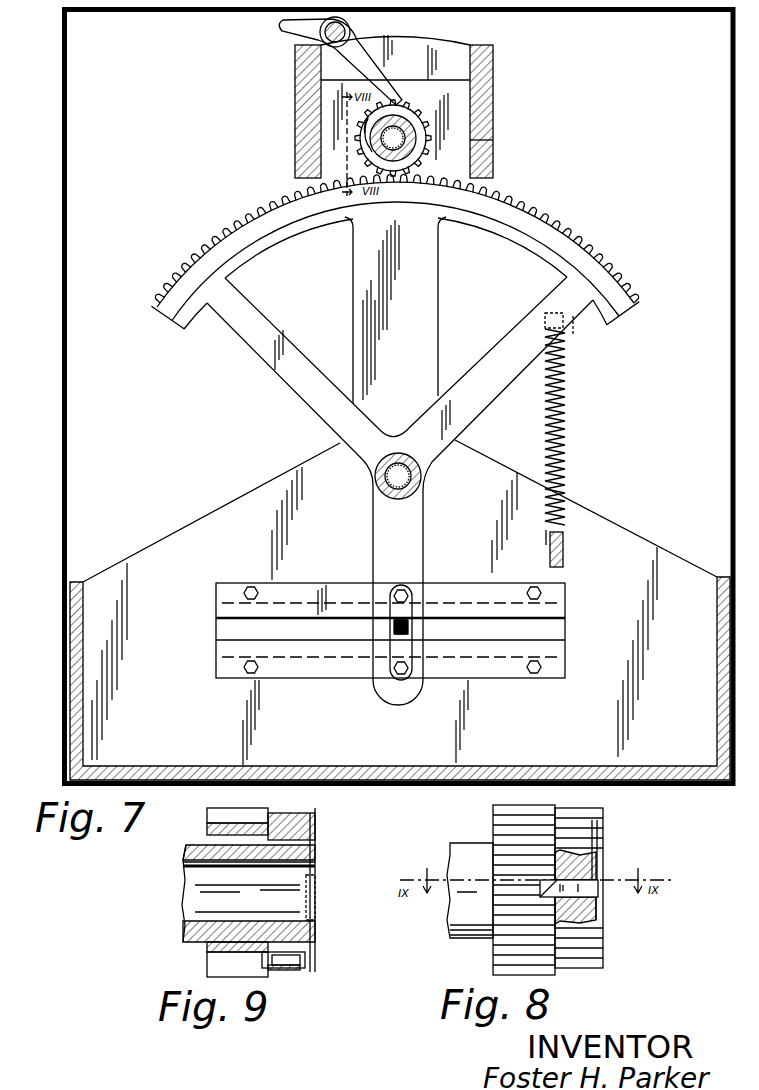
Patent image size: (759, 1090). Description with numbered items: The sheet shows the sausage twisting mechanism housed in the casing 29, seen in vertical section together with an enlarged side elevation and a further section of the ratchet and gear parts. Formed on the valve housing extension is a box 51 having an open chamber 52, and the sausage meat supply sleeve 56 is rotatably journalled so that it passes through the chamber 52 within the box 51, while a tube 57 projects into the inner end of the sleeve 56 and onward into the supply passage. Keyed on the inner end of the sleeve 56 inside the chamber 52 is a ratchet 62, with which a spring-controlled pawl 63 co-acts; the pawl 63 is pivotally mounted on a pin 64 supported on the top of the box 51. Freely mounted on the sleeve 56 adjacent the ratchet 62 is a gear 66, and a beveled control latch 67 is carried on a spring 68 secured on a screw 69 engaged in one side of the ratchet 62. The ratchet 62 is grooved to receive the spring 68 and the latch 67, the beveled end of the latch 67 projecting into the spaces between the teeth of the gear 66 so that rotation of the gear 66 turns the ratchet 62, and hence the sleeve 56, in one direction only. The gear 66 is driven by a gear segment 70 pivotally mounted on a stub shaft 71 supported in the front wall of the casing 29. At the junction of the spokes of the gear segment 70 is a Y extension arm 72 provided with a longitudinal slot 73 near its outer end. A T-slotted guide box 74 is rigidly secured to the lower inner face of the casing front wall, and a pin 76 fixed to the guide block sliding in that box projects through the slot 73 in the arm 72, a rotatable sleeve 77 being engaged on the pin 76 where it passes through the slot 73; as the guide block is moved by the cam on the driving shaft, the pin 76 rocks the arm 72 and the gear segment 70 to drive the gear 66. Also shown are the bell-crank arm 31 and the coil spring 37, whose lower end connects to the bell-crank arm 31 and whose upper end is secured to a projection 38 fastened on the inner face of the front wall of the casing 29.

In FIG. 7, the casing 29 is at (63, 728).
In FIG. 7, the bell-crank arm 31 is at (566, 558).
In FIG. 7, the coil spring 37 is at (567, 415).
In FIG. 7, the projection 38 is at (568, 328).
In FIG. 7, the box 51 is at (480, 147).
In FIG. 7, the open chamber 52 is at (470, 50).
In FIG. 7, the sausage meat supply sleeve 56 is at (330, 150).
In FIG. 9, the sausage meat supply sleeve 56 is at (318, 858).
In FIG. 8, the sausage meat supply sleeve 56 is at (468, 822).
In FIG. 7, the tube 57 is at (413, 114).
In FIG. 9, the tube 57 is at (318, 866).
In FIG. 7, the ratchet 62 is at (420, 145).
In FIG. 9, the ratchet 62 is at (312, 826).
In FIG. 8, the ratchet 62 is at (580, 820).
In FIG. 7, the pawl 63 is at (363, 53).
In FIG. 7, the pin 64 is at (322, 30).
In FIG. 9, the gear 66 is at (212, 814).
In FIG. 8, the gear 66 is at (518, 795).
In FIG. 7, the control latch 67 is at (362, 150).
In FIG. 9, the control latch 67 is at (305, 968).
In FIG. 8, the control latch 67 is at (597, 915).
In FIG. 7, the spring 68 is at (364, 141).
In FIG. 9, the spring 68 is at (316, 942).
In FIG. 8, the spring 68 is at (597, 870).
In FIG. 7, the screw 69 is at (358, 122).
In FIG. 8, the screw 69 is at (598, 832).
In FIG. 7, the gear segment 70 is at (520, 212).
In FIG. 7, the stub shaft 71 is at (375, 478).
In FIG. 7, the Y extension arm 72 is at (388, 518).
In FIG. 7, the longitudinal slot 73 is at (403, 603).
In FIG. 7, the T-slotted guide box 74 is at (508, 680).
In FIG. 7, the pin 76 is at (410, 634).
In FIG. 7, the rotatable sleeve 77 is at (393, 632).